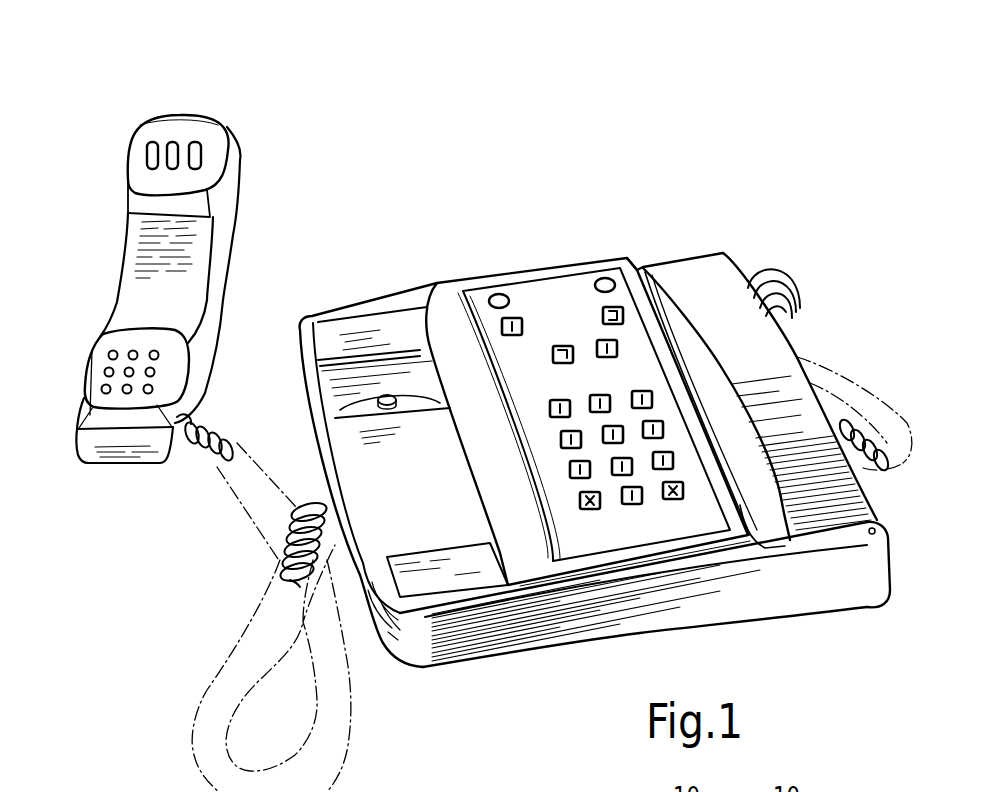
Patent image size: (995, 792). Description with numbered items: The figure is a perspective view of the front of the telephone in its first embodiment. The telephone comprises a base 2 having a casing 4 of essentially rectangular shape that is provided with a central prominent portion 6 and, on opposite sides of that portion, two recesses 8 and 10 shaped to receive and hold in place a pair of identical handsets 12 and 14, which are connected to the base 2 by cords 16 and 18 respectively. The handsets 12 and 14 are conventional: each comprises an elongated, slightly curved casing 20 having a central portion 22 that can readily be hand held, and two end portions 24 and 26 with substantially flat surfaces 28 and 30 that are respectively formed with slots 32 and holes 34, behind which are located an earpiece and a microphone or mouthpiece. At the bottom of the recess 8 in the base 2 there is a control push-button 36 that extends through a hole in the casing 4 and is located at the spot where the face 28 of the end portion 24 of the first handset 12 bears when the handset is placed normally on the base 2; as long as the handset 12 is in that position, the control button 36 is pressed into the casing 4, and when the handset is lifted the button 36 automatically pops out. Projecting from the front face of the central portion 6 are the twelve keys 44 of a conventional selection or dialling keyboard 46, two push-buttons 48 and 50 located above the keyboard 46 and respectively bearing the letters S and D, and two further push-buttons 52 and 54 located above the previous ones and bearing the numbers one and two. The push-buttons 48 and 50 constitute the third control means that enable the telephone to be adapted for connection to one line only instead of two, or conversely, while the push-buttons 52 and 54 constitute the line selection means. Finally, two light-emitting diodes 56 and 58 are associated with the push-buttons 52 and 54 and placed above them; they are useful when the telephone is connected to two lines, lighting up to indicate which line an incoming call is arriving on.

The base 2 is at (530, 657).
The casing 4 is at (690, 610).
The central prominent portion 6 is at (553, 305).
The recess 8 is at (335, 335).
The recess 10 is at (876, 535).
The handset 12 is at (250, 197).
The handset 14 is at (695, 250).
The cord 16 is at (240, 498).
The cord 18 is at (847, 387).
The casing 20 is at (228, 233).
The central portion 22 is at (140, 272).
The end portion 24 is at (223, 167).
The end portion 26 is at (77, 450).
The flat surface 28 is at (213, 130).
The flat surface 30 is at (93, 373).
The slots 32 is at (195, 140).
The holes 34 is at (106, 394).
The control push-button 36 is at (388, 396).
The keys 44 is at (561, 442).
The dialling keyboard 46 is at (647, 522).
The push-button 48 is at (555, 348).
The push-button 50 is at (616, 348).
The push-button 52 is at (512, 316).
The push-button 54 is at (604, 313).
The light-emitting diode 56 is at (490, 297).
The light-emitting diode 58 is at (607, 278).